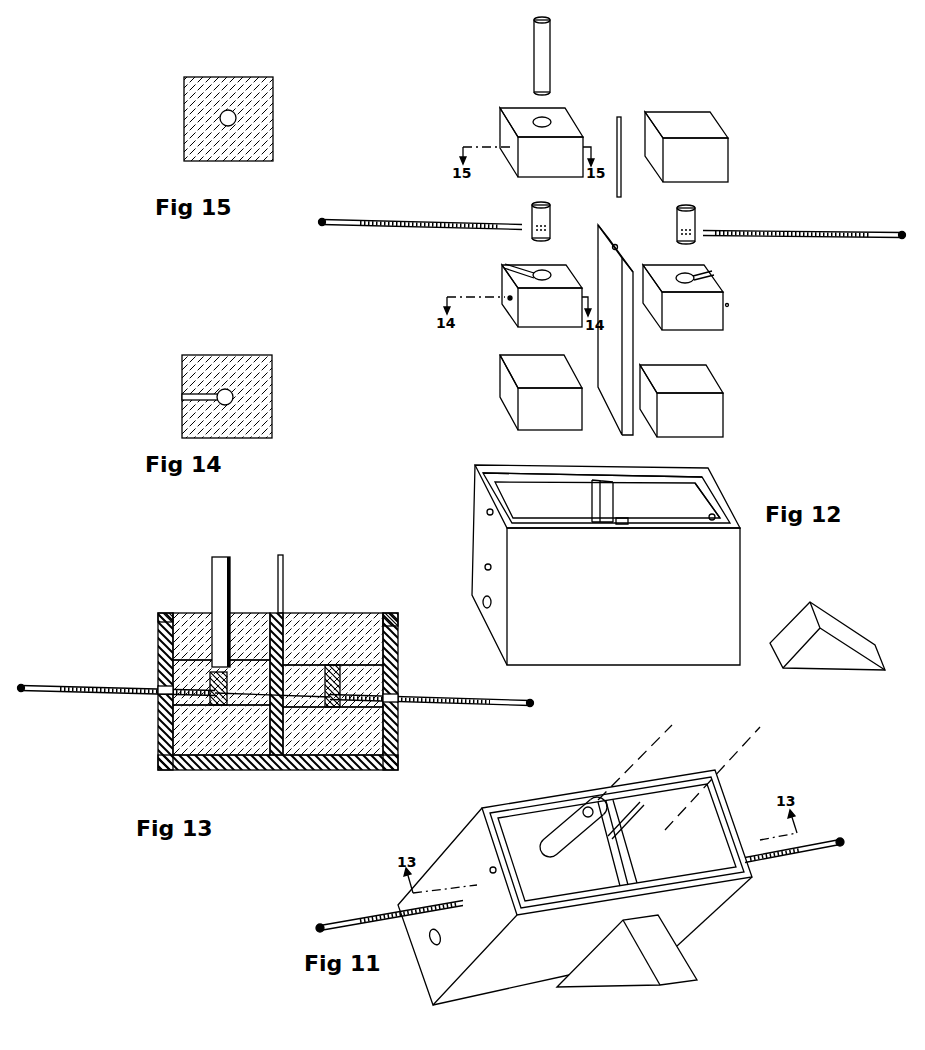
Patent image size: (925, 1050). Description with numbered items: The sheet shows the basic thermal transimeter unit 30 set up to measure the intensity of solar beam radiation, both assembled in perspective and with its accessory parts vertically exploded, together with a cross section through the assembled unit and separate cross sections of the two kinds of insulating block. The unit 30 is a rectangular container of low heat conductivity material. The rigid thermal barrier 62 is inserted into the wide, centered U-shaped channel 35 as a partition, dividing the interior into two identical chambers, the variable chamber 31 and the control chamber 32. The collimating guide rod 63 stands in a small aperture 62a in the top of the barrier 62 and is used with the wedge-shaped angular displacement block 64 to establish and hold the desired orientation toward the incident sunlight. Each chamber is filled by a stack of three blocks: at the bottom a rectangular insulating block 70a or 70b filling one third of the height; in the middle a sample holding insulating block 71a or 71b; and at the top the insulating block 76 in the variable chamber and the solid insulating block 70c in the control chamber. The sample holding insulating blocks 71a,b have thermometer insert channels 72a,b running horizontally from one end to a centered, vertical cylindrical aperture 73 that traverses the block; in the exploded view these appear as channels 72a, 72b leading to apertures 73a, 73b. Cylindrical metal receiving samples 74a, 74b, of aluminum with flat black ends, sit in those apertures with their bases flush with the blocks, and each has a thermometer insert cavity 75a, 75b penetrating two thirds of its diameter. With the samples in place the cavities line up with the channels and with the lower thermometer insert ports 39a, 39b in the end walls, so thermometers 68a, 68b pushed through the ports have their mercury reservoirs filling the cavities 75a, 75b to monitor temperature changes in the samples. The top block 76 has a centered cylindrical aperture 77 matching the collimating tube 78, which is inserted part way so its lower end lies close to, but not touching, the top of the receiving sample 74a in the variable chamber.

In FIG. 12, the basic thermal transimeter unit 30 is at (640, 670).
In FIG. 13, the basic thermal transimeter unit 30 is at (253, 773).
In FIG. 12, the variable chamber 31 is at (547, 502).
In FIG. 12, the control chamber 32 is at (660, 508).
In FIG. 12, the U-shaped channel 35 is at (615, 522).
In FIG. 12, the lower thermometer insert port 39a is at (484, 568).
In FIG. 13, the lower thermometer insert port 39a is at (167, 688).
In FIG. 13, the lower thermometer insert port 39b is at (398, 697).
In FIG. 12, the rigid thermal barrier 62 is at (634, 345).
In FIG. 13, the rigid thermal barrier 62 is at (273, 613).
In FIG. 12, the aperture 62a is at (618, 243).
In FIG. 12, the collimating guide rod 63 is at (623, 109).
In FIG. 13, the collimating guide rod 63 is at (282, 554).
In FIG. 12, the angular displacement block 64 is at (835, 628).
In FIG. 12, the thermometer 68a is at (432, 218).
In FIG. 13, the thermometer 68a is at (77, 695).
In FIG. 12, the thermometer 68b is at (817, 230).
In FIG. 13, the thermometer 68b is at (477, 712).
In FIG. 12, the rectangular insulating block 70a is at (530, 369).
In FIG. 13, the rectangular insulating block 70a is at (177, 735).
In FIG. 12, the rectangular insulating block 70b is at (680, 378).
In FIG. 13, the rectangular insulating block 70b is at (347, 738).
In FIG. 12, the solid insulating block 70c is at (690, 124).
In FIG. 13, the solid insulating block 70c is at (333, 637).
In FIG. 12, the sample holding insulating block 71a is at (522, 279).
In FIG. 13, the sample holding insulating block 71a is at (176, 664).
In FIG. 12, the sample holding insulating block 71b is at (710, 284).
In FIG. 13, the sample holding insulating block 71b is at (378, 672).
In FIG. 14, the sample holding insulating blocks 71a,b is at (250, 397).
In FIG. 12, the thermometer insert channel 72a is at (509, 299).
In FIG. 12, the thermometer insert channel 72b is at (727, 305).
In FIG. 14, the thermometer insert channels 72a,b is at (182, 396).
In FIG. 14, the cylindrical aperture 73 is at (228, 392).
In FIG. 12, the cylindrical aperture 73a is at (537, 275).
In FIG. 12, the cylindrical aperture 73b is at (695, 279).
In FIG. 12, the metal receiving sample 74a is at (553, 213).
In FIG. 13, the metal receiving sample 74a is at (218, 684).
In FIG. 12, the metal receiving sample 74b is at (678, 216).
In FIG. 13, the metal receiving sample 74b is at (350, 666).
In FIG. 12, the thermometer insert cavity 75a is at (535, 223).
In FIG. 12, the thermometer insert cavity 75b is at (699, 233).
In FIG. 15, the insulating block 76 is at (240, 143).
In FIG. 12, the insulating block 76 is at (510, 134).
In FIG. 13, the insulating block 76 is at (165, 616).
In FIG. 15, the cylindrical aperture 77 is at (236, 117).
In FIG. 12, the cylindrical aperture 77 is at (551, 119).
In FIG. 12, the collimating tube 78 is at (553, 41).
In FIG. 13, the collimating tube 78 is at (210, 559).